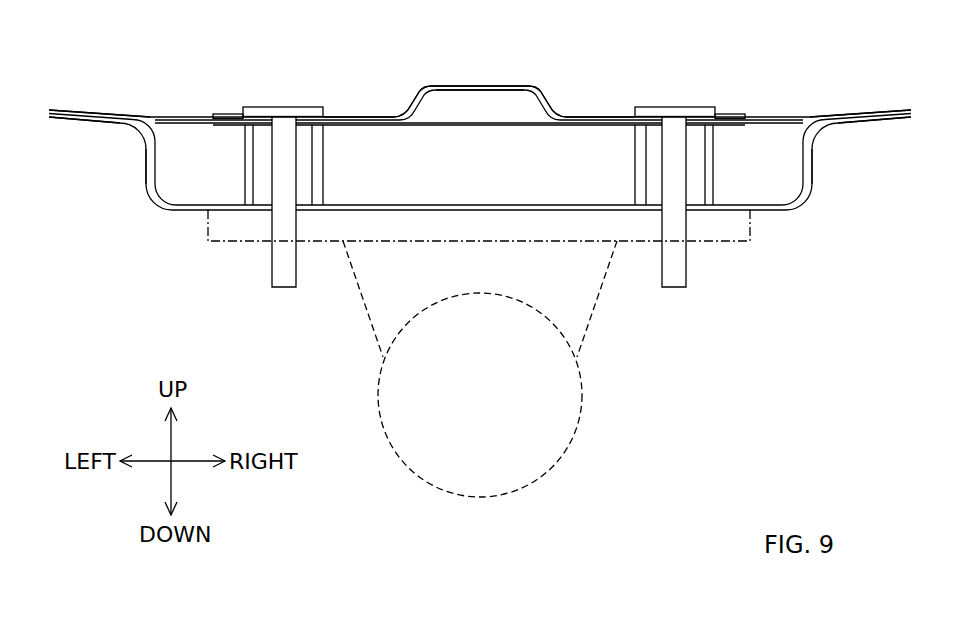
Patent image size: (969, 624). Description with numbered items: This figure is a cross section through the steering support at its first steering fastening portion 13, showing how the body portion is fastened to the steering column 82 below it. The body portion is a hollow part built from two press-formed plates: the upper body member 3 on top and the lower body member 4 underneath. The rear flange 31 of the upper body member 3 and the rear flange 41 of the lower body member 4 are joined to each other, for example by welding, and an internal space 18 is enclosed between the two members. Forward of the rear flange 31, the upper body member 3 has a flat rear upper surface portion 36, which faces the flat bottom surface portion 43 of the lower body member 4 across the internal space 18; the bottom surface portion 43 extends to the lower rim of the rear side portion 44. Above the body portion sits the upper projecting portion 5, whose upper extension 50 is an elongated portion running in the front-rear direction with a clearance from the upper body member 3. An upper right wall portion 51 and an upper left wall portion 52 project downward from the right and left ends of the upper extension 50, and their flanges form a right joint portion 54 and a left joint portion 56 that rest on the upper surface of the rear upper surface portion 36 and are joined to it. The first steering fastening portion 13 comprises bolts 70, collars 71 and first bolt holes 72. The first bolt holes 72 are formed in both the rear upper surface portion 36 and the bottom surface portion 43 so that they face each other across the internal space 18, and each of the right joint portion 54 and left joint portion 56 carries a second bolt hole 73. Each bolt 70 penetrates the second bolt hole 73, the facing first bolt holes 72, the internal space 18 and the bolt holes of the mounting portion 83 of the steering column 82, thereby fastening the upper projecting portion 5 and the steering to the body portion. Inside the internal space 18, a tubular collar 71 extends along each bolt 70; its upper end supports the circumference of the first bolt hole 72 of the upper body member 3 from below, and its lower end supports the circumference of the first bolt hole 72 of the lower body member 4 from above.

The upper body member 3 is at (197, 92).
The rear flange 31 is at (83, 108).
The lower body member 4 is at (178, 240).
The rear flange 41 is at (87, 124).
The bottom surface portion 43 is at (389, 207).
The rear side portion 44 is at (148, 160).
The upper projecting portion 5 is at (441, 62).
The upper extension 50 is at (480, 86).
The upper right wall portion 51 is at (558, 105).
The upper left wall portion 52 is at (400, 110).
The right joint portion 54 is at (600, 117).
The left joint portion 56 is at (354, 116).
The first steering fastening portion 13 is at (281, 92).
The internal space 18 is at (485, 179).
The rear upper surface portion 36 is at (450, 127).
The bolt 70 is at (276, 288).
The collar 71 is at (318, 178).
The first bolt hole 72 is at (288, 124).
The second bolt hole 73 is at (286, 108).
The steering column 82 is at (493, 409).
The mounting portion 83 is at (482, 243).